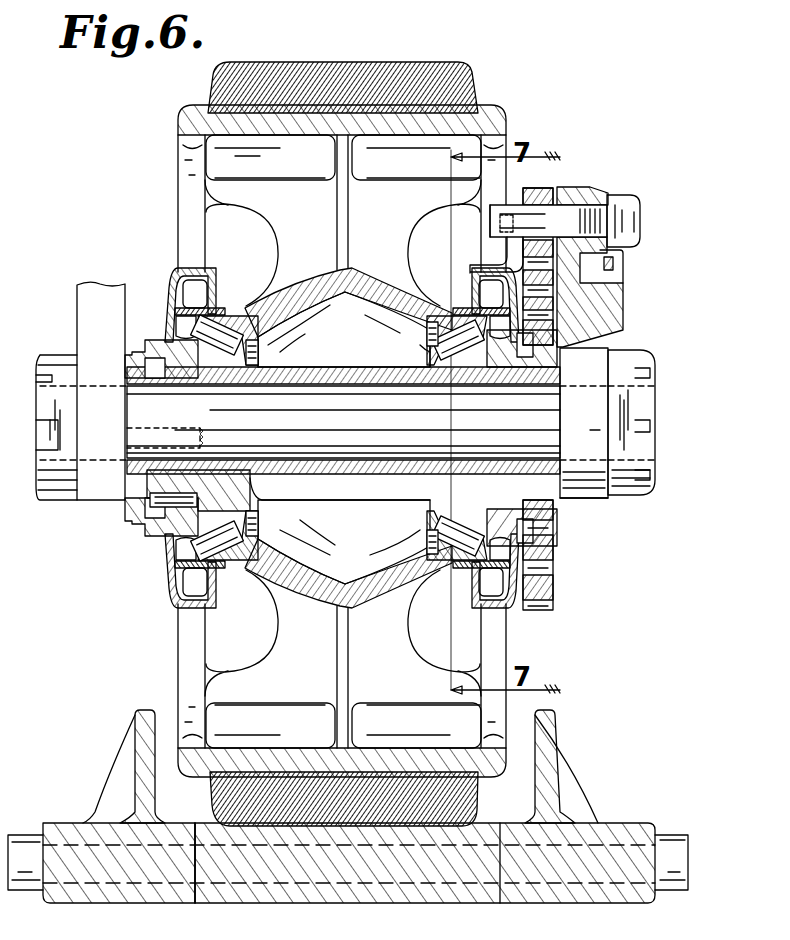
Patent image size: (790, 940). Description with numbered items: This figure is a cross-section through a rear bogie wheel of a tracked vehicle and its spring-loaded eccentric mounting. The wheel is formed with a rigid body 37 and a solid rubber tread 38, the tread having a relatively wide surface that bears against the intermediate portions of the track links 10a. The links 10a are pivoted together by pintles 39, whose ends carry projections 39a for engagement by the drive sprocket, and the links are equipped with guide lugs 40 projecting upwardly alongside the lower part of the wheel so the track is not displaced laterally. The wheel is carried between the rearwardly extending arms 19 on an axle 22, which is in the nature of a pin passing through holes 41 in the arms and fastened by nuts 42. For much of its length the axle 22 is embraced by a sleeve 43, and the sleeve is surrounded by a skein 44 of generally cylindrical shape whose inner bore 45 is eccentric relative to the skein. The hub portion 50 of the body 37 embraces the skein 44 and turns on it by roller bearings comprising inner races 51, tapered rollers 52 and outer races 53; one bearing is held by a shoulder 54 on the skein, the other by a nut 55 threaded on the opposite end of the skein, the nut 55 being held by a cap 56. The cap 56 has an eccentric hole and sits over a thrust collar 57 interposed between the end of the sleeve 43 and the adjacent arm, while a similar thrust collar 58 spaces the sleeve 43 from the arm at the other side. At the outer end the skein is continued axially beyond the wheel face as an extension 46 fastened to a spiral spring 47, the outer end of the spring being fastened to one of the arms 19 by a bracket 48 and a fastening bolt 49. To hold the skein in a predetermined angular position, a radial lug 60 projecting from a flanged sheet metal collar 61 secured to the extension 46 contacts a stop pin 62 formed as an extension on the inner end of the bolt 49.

The solid rubber tread 38 is at (215, 77).
The rigid body 37 is at (185, 136).
The hub portion 50 is at (312, 295).
The tapered rollers 52 is at (272, 352).
The inner races 51 is at (272, 368).
The skein 44 is at (455, 490).
The inner bore 45 is at (292, 476).
The axle 22 is at (202, 418).
The holes 41 is at (586, 386).
The nuts 42 is at (640, 404).
The thrust collar 58 is at (557, 458).
The rearwardly extending arms 19 is at (90, 307).
The nut 55 is at (170, 338).
The thrust collar 57 is at (128, 485).
The outer races 53 is at (240, 340).
The cap 56 is at (150, 528).
The flanged sheet metal collar 61 is at (472, 282).
The shoulder 54 is at (505, 368).
The sleeve 43 is at (488, 384).
The spiral spring 47 is at (556, 542).
The stop pin 62 is at (517, 207).
The skein extension 46 is at (566, 345).
The bracket 48 is at (598, 195).
The fastening bolt 49 is at (640, 214).
The radial lug 60 is at (506, 240).
The guide lugs 40 is at (548, 752).
The pintles 39 is at (612, 842).
The projections 39a is at (676, 838).
The track links 10a is at (520, 892).